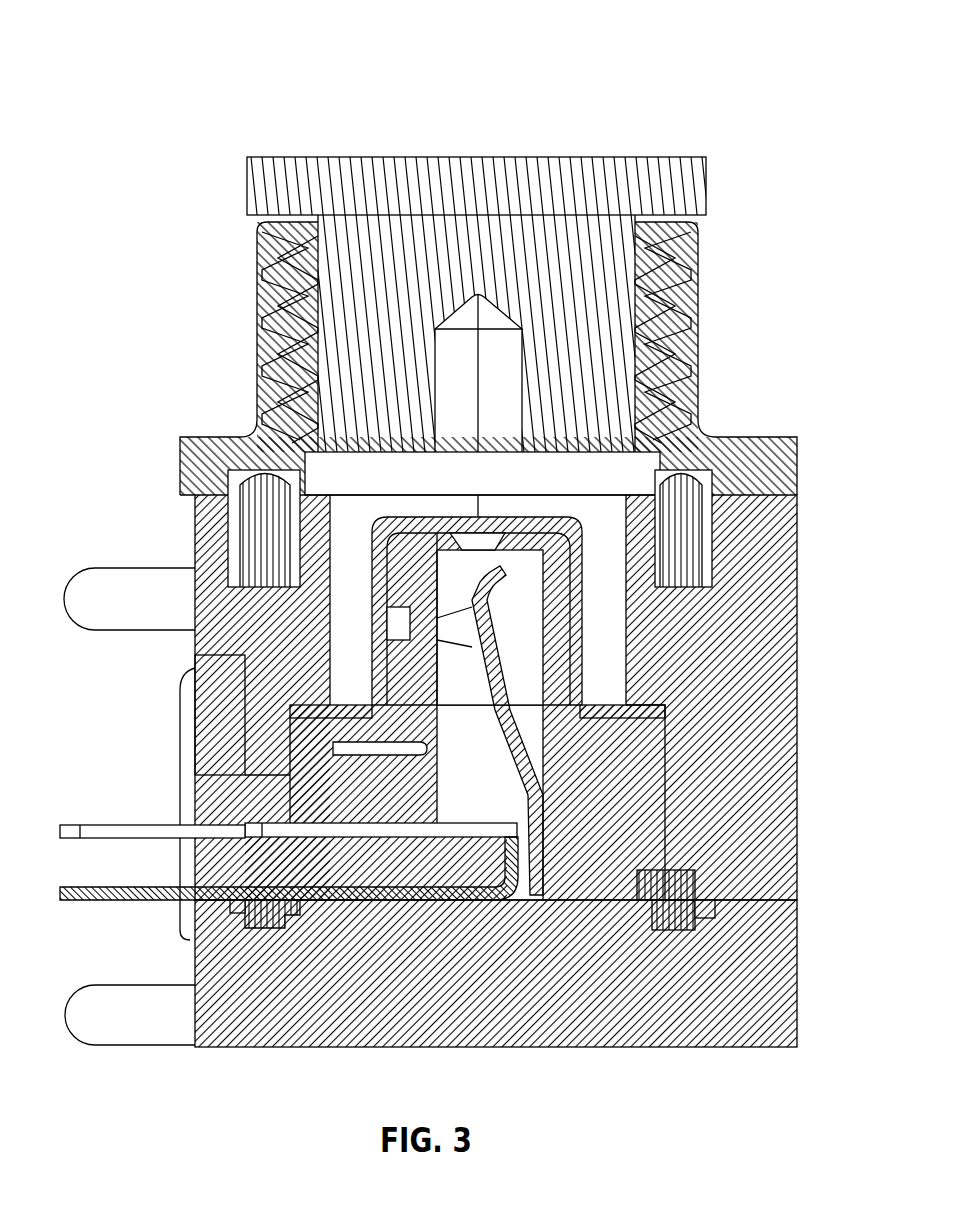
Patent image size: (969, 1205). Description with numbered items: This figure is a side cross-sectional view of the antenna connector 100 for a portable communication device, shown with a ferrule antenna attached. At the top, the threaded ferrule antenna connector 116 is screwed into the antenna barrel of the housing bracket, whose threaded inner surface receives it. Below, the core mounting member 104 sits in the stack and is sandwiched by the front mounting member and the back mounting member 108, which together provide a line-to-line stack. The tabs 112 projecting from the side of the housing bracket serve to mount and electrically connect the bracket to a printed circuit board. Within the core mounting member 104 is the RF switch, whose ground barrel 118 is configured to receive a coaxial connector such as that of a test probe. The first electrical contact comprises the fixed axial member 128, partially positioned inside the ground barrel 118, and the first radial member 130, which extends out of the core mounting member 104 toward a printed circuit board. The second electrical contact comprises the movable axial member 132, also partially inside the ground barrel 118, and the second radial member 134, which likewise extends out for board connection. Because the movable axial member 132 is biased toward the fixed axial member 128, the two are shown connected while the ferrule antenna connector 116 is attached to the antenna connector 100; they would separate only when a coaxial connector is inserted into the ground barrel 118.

The antenna connector 100 is at (102, 122).
The core mounting member 104 is at (767, 763).
The back mounting member 108 is at (767, 958).
The tabs 112 is at (128, 602).
The ferrule antenna connector 116 is at (487, 190).
The ground barrel 118 is at (580, 598).
The fixed axial member 128 is at (430, 718).
The first radial member 130 is at (133, 830).
The movable axial member 132 is at (513, 723).
The second radial member 134 is at (120, 903).